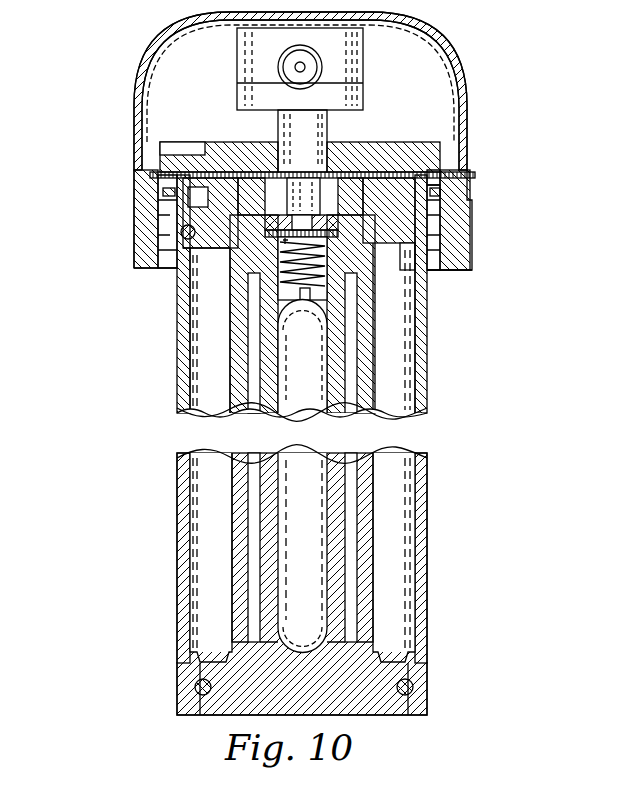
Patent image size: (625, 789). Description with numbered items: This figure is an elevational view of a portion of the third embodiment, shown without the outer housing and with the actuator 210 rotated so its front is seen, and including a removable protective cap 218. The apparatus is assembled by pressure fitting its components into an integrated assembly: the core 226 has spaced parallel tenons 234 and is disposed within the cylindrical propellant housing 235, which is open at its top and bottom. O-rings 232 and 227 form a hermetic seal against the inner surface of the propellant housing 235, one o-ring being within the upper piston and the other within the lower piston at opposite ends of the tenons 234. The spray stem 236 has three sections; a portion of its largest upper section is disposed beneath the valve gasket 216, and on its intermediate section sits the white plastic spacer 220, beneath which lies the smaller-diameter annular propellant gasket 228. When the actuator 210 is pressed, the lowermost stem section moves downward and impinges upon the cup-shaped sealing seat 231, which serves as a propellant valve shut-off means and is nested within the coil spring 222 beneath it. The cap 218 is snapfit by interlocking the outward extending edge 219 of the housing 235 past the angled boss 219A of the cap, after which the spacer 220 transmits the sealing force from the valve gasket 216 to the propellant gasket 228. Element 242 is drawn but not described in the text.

The actuator 210 is at (355, 65).
The valve gasket 216 is at (400, 172).
The cap 218 is at (165, 58).
The outward extending edge 219 is at (443, 172).
The angled boss 219A is at (472, 188).
The spacer 220 is at (240, 172).
The coil spring 222 is at (312, 295).
The core 226 is at (408, 653).
The o-ring 227 is at (413, 682).
The propellant gasket 228 is at (338, 255).
The sealing seat 231 is at (283, 243).
The o-ring 232 is at (181, 234).
The tenons 234 is at (285, 468).
The propellant housing 235 is at (178, 378).
The spray stem 236 is at (303, 205).
The ring 242 is at (165, 192).